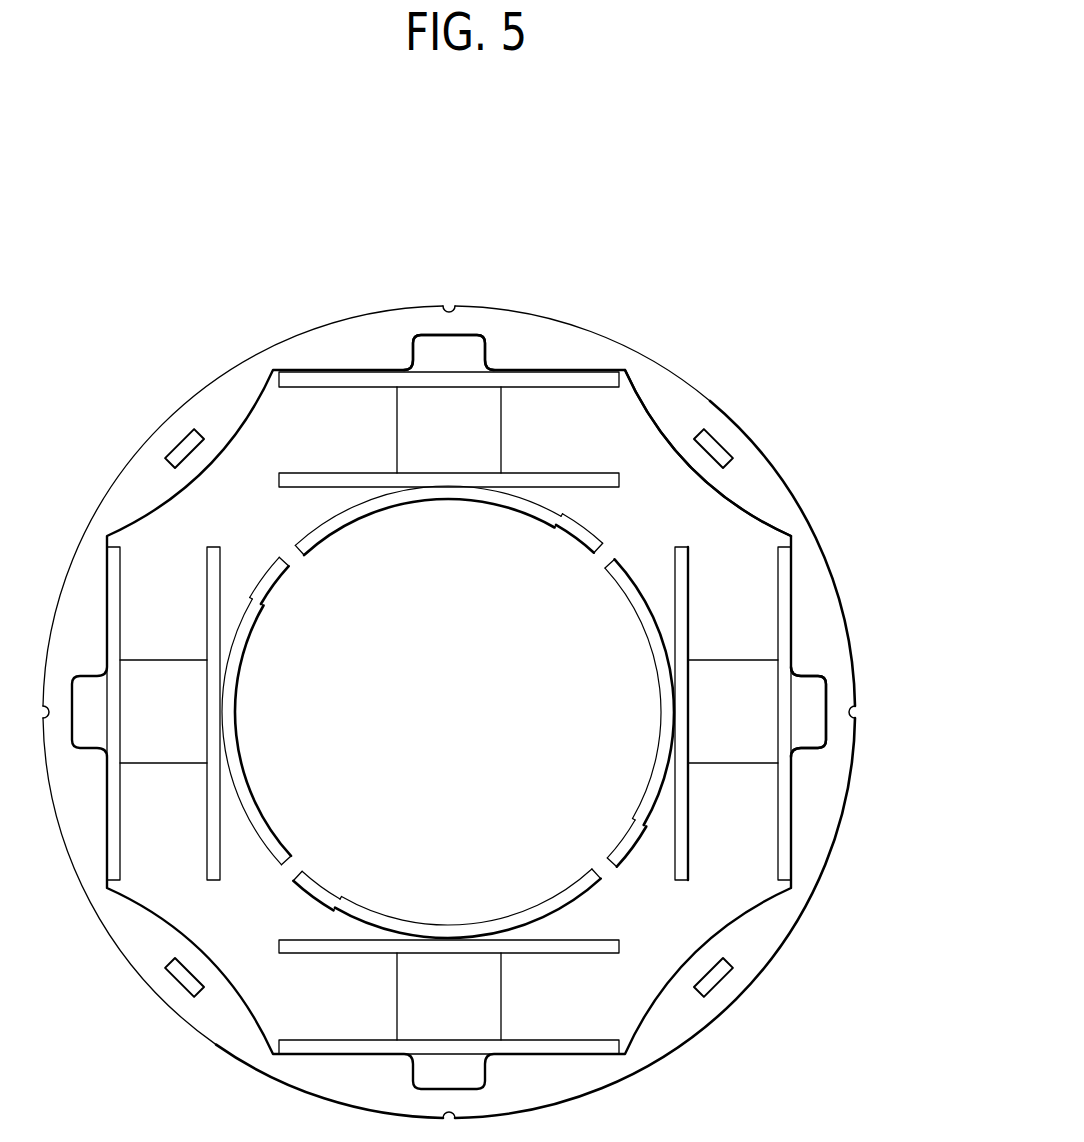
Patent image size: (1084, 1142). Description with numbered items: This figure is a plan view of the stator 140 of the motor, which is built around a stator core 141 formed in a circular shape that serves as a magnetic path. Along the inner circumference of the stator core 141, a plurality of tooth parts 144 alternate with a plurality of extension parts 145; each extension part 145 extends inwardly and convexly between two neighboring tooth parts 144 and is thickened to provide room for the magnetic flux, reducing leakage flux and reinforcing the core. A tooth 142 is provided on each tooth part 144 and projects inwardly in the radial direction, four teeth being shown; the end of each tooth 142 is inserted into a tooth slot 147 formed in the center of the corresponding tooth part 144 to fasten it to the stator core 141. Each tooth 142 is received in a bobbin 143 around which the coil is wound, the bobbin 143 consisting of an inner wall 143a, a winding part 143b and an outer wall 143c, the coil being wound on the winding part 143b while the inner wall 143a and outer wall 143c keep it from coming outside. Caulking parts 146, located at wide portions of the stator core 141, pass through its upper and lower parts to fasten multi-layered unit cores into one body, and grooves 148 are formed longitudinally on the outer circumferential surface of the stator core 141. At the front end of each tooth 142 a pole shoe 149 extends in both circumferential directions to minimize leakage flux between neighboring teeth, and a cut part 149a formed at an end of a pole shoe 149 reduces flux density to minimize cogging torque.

The stator 140 is at (667, 322).
The stator core 141 is at (757, 487).
The tooth 142 is at (433, 348).
The bobbin 143 is at (822, 755).
The inner wall 143a is at (682, 862).
The winding part 143b is at (738, 768).
The outer wall 143c is at (782, 835).
The tooth part 144 is at (550, 370).
The extension part 145 is at (673, 407).
The caulking part 146 is at (715, 978).
The tooth slot 147 is at (820, 695).
The groove 148 is at (857, 711).
The pole shoe 149 is at (253, 641).
The cut part 149a is at (277, 573).